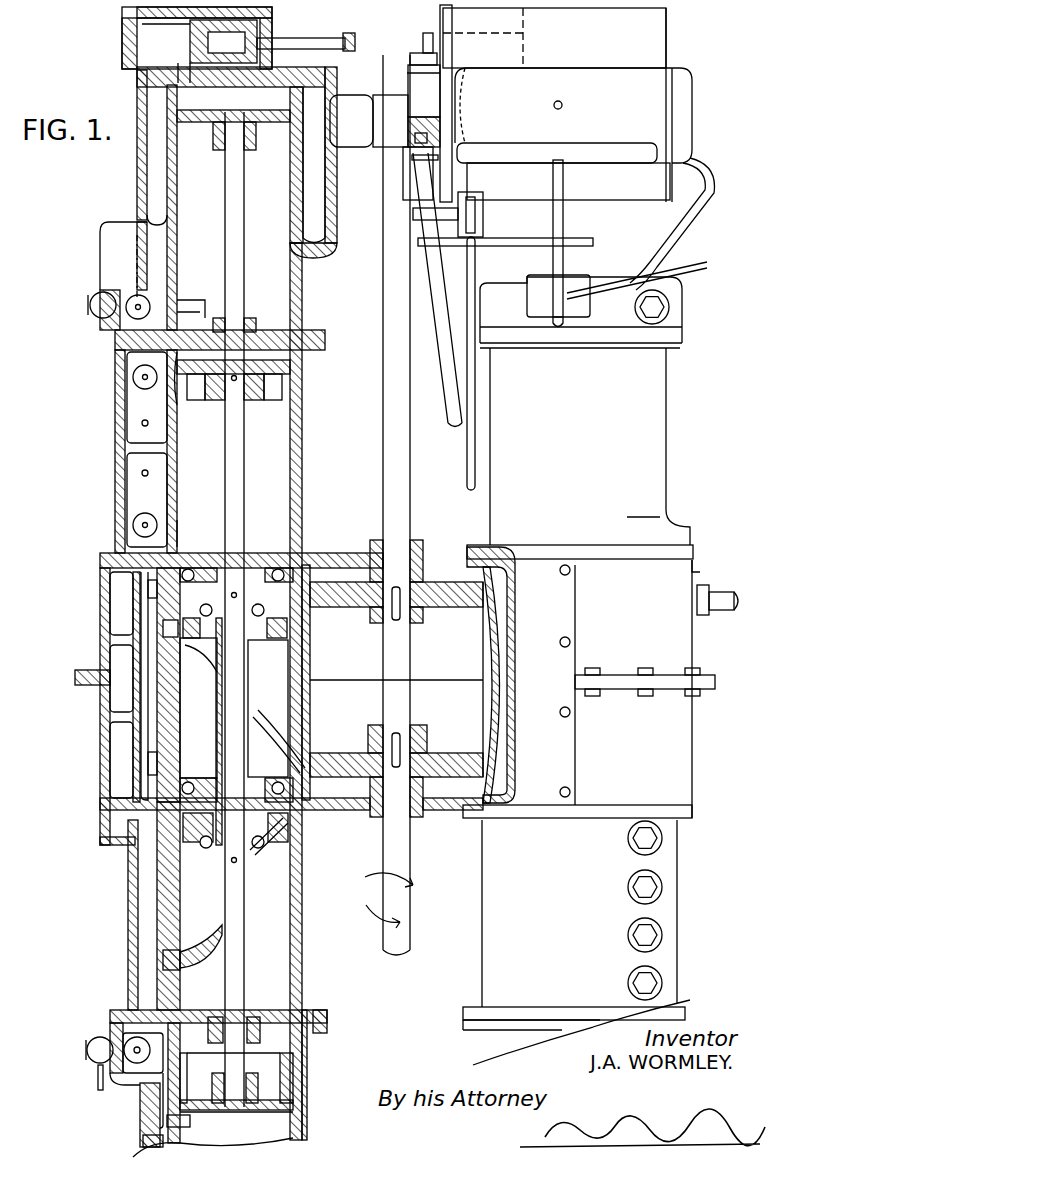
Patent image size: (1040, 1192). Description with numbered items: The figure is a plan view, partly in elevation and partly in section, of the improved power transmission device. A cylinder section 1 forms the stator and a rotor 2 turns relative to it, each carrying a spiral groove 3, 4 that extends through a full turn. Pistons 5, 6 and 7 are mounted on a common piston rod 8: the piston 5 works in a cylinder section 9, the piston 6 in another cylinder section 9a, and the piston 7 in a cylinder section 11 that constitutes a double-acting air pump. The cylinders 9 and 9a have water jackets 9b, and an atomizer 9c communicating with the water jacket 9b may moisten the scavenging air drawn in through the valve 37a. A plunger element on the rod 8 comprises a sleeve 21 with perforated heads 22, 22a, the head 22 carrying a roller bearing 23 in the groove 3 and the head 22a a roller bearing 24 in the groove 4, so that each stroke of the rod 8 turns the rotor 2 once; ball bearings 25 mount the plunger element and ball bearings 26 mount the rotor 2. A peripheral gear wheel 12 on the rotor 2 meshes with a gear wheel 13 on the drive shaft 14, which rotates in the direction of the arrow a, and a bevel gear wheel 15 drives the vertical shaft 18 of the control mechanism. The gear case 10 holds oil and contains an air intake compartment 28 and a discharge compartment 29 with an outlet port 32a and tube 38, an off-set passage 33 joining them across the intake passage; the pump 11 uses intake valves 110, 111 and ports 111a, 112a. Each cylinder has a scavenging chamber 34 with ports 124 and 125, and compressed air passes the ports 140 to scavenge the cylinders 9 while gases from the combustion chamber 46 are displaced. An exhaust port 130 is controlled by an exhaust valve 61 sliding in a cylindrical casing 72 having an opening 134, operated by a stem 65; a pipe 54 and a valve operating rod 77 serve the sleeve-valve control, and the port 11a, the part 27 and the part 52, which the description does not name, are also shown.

The cylinder section 1 is at (307, 962).
The rotor 2 is at (370, 9).
The spiral groove 3 is at (213, 919).
The spiral groove 4 is at (258, 726).
The piston 5 is at (275, 1072).
The piston 6 is at (287, 166).
The piston 7 is at (277, 387).
The piston rod 8 is at (230, 461).
The cylinder section 9 is at (303, 1119).
The cylinder section 9a is at (288, 297).
The water jacket 9b is at (155, 155).
The atomizer 9c is at (97, 298).
The gear case 10 is at (682, 747).
The cylinder section 11 is at (283, 452).
The port 11a is at (120, 432).
The gear wheel 12 is at (148, 602).
The gear wheel 13 is at (322, 754).
The drive shaft 14 is at (402, 464).
The bevel gear wheel 15 is at (428, 737).
The vertical shaft 18 is at (120, 42).
The sleeve 21 is at (217, 726).
The head 22 is at (262, 840).
The head 22a is at (268, 641).
The roller bearing 23 is at (693, 597).
The roller bearing 24 is at (203, 650).
The ball bearings 25 is at (263, 609).
The ball bearings 26 is at (355, 553).
The recess 27 is at (118, 776).
The air intake compartment 28 is at (117, 701).
The compartment 29 is at (120, 622).
The outlet port 32a is at (698, 572).
The off-set passage 33 is at (147, 917).
The chamber 34 is at (123, 1123).
The valve 37a is at (118, 337).
The tube 38 is at (717, 587).
The combustion chamber 46 is at (653, 51).
The hanger 52 is at (542, 318).
The pipe 54 is at (672, 221).
The exhaust valve 61 is at (211, 41).
The stem 65 is at (282, 40).
The cylindrical casing 72 is at (185, 21).
The valve operating rod 77 is at (587, 239).
The intake valve 110 is at (140, 376).
The intake valve 111 is at (135, 524).
The port 111a is at (182, 536).
The port 112a is at (177, 403).
The port 124 is at (173, 246).
The port 125 is at (187, 324).
The exhaust port 130 is at (185, 77).
The opening 134 is at (122, 34).
The port 140 is at (190, 1121).
The arrow a is at (398, 897).